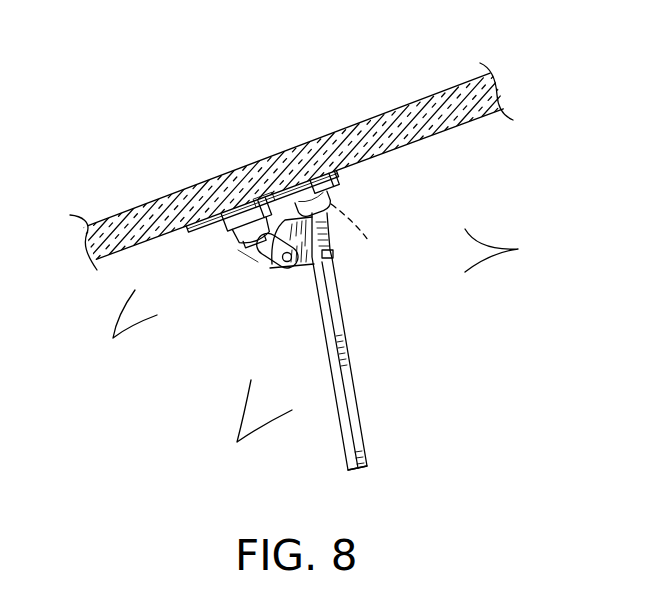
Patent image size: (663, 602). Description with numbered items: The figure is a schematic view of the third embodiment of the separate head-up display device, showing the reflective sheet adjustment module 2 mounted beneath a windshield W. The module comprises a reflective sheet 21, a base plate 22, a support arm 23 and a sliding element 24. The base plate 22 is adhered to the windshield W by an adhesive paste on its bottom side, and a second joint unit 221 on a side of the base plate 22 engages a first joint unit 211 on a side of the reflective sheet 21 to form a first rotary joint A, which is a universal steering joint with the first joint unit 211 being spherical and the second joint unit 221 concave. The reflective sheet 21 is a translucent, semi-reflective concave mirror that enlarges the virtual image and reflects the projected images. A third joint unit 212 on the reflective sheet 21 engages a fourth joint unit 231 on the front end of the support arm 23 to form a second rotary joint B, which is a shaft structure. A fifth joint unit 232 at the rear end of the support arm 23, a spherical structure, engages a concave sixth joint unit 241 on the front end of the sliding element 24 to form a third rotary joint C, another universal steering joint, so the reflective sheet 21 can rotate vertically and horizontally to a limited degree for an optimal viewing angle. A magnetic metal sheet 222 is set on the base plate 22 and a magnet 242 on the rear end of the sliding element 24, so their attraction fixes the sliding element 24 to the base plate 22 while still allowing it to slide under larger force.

The windshield W is at (170, 200).
The reflective sheet adjustment module 2 is at (380, 377).
The reflective sheet 21 is at (340, 336).
The first joint unit 211 is at (368, 240).
The third joint unit 212 is at (297, 262).
The base plate 22 is at (337, 177).
The second joint unit 221 is at (330, 198).
The magnetic metal sheet 222 is at (264, 210).
The support arm 23 is at (262, 255).
The fourth joint unit 231 is at (275, 255).
The fifth joint unit 232 is at (244, 262).
The sliding element 24 is at (247, 227).
The sixth joint unit 241 is at (228, 254).
The magnet 242 is at (227, 218).
The first rotary joint A is at (507, 250).
The second rotary joint B is at (258, 430).
The third rotary joint C is at (124, 332).